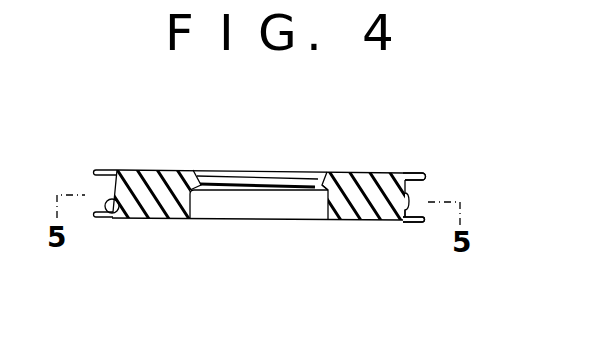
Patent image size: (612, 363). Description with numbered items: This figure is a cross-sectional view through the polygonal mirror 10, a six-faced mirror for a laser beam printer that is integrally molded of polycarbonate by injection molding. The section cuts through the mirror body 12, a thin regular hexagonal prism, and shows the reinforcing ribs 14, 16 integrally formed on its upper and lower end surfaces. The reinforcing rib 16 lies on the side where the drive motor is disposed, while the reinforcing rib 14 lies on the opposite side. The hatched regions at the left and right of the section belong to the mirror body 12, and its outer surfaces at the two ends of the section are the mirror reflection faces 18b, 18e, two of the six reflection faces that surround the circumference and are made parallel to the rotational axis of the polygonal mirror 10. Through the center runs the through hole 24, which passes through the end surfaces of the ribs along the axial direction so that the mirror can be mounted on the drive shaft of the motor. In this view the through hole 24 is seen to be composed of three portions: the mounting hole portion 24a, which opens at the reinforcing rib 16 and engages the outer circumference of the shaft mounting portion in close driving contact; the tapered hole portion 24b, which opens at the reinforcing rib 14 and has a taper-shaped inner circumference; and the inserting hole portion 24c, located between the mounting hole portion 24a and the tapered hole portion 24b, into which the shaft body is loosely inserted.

The polygonal mirror 10 is at (378, 173).
The mirror body 12 is at (346, 185).
The reinforcing rib 14 is at (427, 177).
The reinforcing rib 16 is at (422, 222).
The mirror reflection face 18b is at (108, 215).
The mirror reflection face 18e is at (393, 221).
The through hole 24 is at (235, 255).
The mounting hole portion 24a is at (200, 192).
The tapered hole portion 24b is at (257, 180).
The inserting hole portion 24c is at (240, 188).